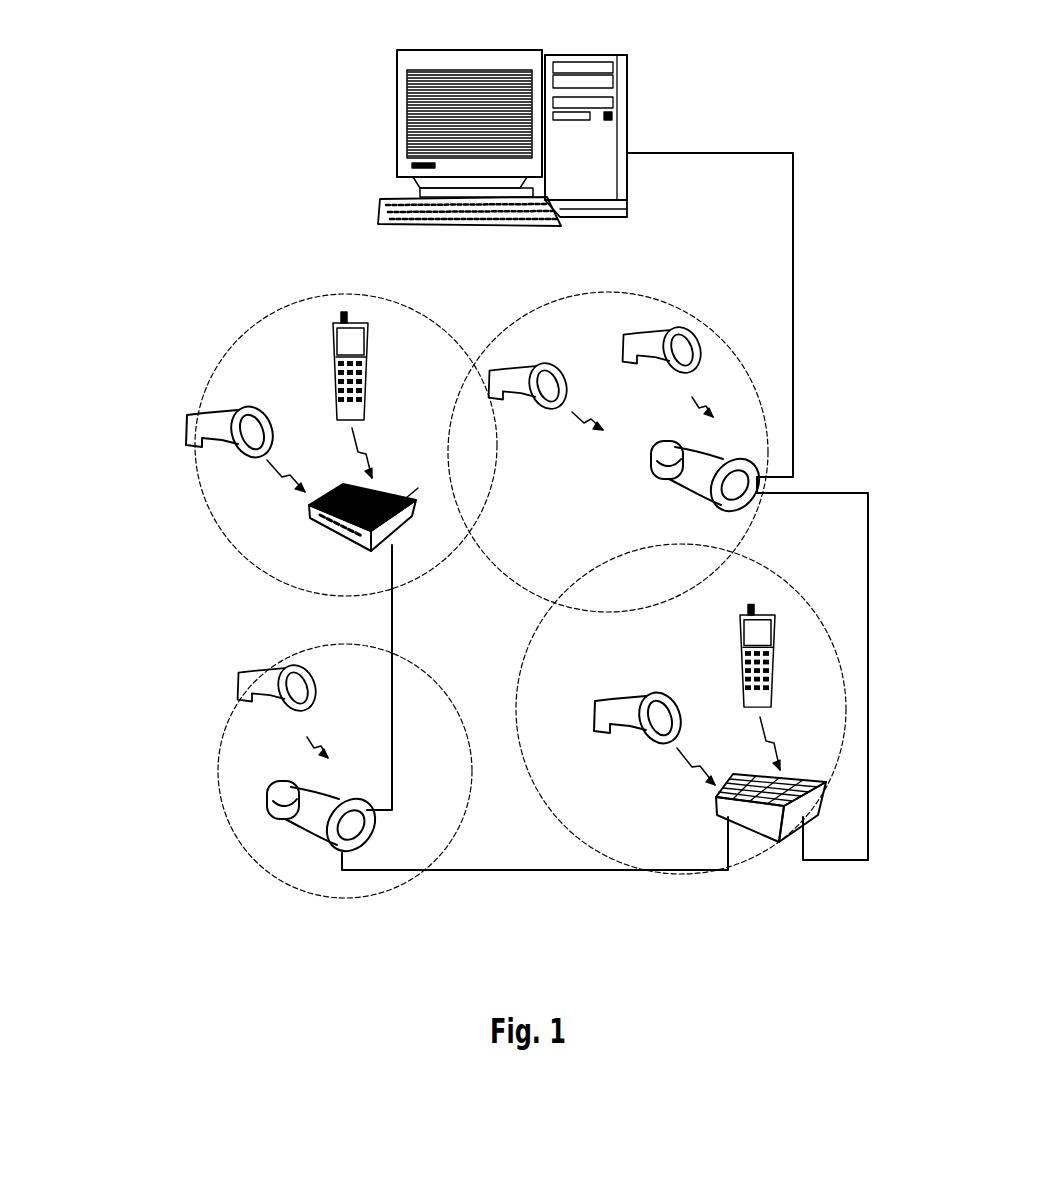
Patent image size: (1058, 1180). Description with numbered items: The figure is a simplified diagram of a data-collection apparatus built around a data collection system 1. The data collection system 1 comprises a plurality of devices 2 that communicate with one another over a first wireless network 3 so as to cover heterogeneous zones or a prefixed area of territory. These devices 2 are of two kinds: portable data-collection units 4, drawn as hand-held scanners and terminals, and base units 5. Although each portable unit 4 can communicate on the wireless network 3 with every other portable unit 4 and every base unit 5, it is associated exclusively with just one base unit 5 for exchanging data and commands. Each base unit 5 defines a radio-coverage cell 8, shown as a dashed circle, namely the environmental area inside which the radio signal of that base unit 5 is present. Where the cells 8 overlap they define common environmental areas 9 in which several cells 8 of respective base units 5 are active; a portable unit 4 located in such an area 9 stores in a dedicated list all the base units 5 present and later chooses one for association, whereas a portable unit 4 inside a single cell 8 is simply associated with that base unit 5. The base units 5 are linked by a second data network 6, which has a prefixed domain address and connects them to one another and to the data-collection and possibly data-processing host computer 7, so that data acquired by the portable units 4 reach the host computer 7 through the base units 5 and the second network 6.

The data collection system 1 is at (440, 616).
The devices 2 is at (770, 663).
The first wireless network 3 is at (290, 483).
The portable data-collection unit 4 is at (332, 343).
The base unit 5 is at (310, 526).
The second data network 6 is at (787, 185).
The host computer 7 is at (608, 135).
The radio-coverage cell 8 is at (642, 292).
The common environmental area 9 is at (468, 425).